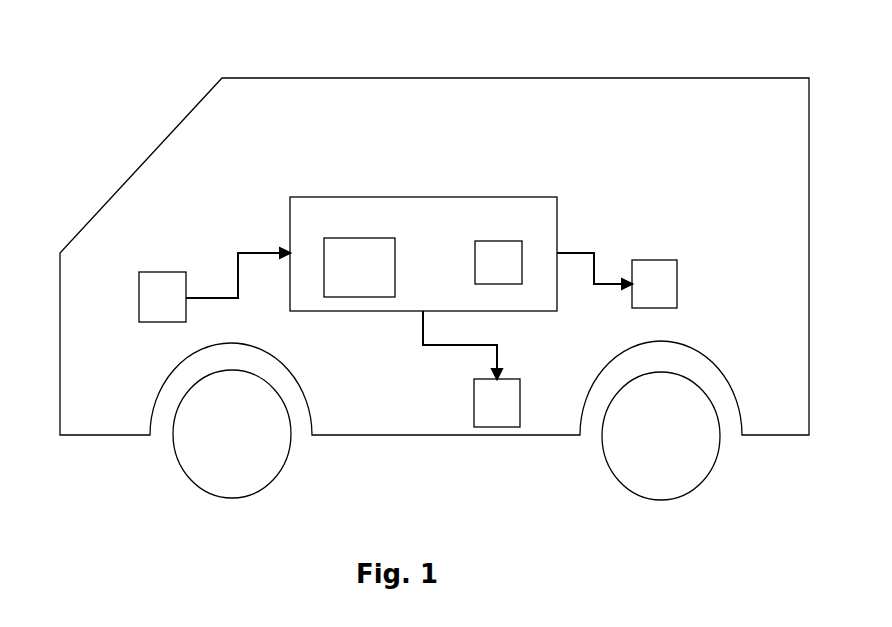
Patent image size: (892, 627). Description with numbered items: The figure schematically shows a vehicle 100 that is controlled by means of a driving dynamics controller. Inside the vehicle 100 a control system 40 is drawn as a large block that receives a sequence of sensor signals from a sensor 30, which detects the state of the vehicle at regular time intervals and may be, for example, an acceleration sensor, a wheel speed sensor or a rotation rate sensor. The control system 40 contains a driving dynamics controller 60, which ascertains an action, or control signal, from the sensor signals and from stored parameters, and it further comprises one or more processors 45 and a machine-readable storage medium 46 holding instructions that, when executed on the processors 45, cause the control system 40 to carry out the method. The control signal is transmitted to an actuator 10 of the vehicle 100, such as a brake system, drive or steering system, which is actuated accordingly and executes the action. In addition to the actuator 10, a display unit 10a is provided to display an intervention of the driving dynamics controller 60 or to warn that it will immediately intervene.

The vehicle 100 is at (537, 78).
The control system 40 is at (382, 197).
The processors 45 is at (319, 222).
The machine-readable storage medium 46 is at (324, 238).
The driving dynamics controller 60 is at (498, 241).
The sensor 30 is at (139, 305).
The actuator 10 is at (491, 427).
The display unit 10a is at (661, 260).